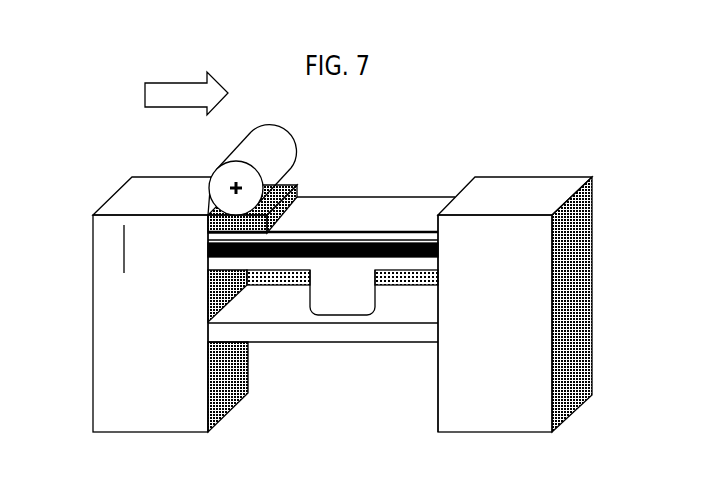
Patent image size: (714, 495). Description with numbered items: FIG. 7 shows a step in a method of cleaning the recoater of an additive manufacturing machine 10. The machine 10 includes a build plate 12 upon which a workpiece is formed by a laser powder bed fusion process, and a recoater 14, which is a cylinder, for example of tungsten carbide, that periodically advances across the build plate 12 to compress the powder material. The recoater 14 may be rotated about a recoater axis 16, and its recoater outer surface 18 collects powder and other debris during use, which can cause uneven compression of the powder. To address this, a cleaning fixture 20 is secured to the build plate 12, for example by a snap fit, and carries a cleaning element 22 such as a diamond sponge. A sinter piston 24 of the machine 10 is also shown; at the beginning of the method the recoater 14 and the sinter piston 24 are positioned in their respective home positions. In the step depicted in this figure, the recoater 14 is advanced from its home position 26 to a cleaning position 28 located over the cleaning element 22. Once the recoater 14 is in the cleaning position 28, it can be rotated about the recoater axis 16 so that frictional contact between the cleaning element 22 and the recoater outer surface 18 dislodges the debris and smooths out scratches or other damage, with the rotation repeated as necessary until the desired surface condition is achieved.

The additive manufacturing machine 10 is at (412, 102).
The build plate 12 is at (410, 253).
The recoater 14 is at (183, 176).
The recoater axis 16 is at (230, 191).
The recoater outer surface 18 is at (228, 152).
The cleaning fixture 20 is at (325, 212).
The cleaning element 22 is at (210, 240).
The sinter piston 24 is at (263, 267).
The home position 26 is at (124, 250).
The cleaning position 28 is at (230, 257).